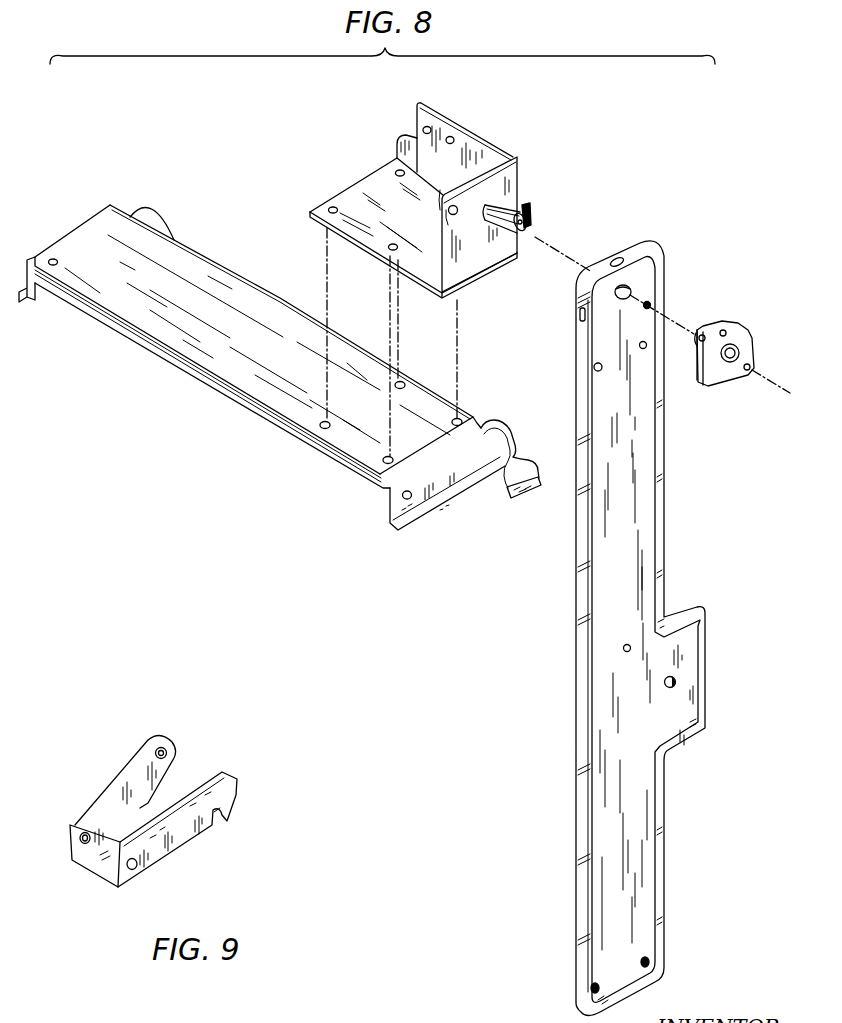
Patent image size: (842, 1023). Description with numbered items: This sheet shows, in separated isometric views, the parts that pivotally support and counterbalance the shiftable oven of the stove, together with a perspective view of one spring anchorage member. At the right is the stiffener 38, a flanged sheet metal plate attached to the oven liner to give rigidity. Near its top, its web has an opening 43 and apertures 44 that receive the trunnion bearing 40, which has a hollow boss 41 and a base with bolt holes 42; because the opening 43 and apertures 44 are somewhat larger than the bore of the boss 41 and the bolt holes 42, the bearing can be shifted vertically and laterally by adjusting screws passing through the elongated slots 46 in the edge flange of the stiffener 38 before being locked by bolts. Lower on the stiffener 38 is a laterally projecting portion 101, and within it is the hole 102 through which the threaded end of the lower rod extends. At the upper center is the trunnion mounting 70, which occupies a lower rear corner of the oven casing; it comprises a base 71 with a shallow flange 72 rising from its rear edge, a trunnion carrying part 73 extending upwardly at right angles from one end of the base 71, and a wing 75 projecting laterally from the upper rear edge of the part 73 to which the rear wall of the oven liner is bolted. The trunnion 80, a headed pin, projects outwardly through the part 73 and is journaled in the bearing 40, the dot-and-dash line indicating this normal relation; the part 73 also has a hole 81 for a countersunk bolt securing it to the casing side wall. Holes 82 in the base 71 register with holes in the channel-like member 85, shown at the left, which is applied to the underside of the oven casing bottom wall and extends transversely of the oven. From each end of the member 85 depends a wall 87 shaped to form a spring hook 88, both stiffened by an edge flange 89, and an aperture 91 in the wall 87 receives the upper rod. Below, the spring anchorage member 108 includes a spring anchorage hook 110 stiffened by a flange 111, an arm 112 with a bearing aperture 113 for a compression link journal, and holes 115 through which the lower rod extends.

In FIG. 8, the trunnion mounting 70 is at (505, 146).
In FIG. 8, the base 71 is at (352, 197).
In FIG. 8, the flange 72 is at (398, 140).
In FIG. 8, the trunnion carrying part 73 is at (505, 181).
In FIG. 8, the wing 75 is at (450, 136).
In FIG. 8, the trunnion 80 is at (514, 230).
In FIG. 8, the hole 81 is at (443, 213).
In FIG. 8, the holes 82 is at (320, 211).
In FIG. 8, the channel-like member 85 is at (287, 408).
In FIG. 8, the wall 87 is at (28, 260).
In FIG. 8, the spring connection or hook 88 is at (534, 466).
In FIG. 8, the edge flange 89 is at (468, 487).
In FIG. 8, the apertures 91 is at (403, 497).
In FIG. 8, the stiffener 38 is at (647, 510).
In FIG. 8, the trunnion bearing 40 is at (738, 383).
In FIG. 8, the hollow boss 41 is at (722, 382).
In FIG. 8, the bolt holes 42 is at (706, 337).
In FIG. 8, the opening 43 is at (628, 290).
In FIG. 8, the apertures 44 is at (652, 303).
In FIG. 8, the elongated openings or slots 46 is at (614, 258).
In FIG. 8, the extension tab 101 is at (683, 656).
In FIG. 8, the hole 102 is at (677, 687).
In FIG. 9, the spring anchorage member 108 is at (110, 864).
In FIG. 9, the spring anchorage hook 110 is at (220, 823).
In FIG. 9, the flange 111 is at (180, 823).
In FIG. 9, the arm 112 is at (125, 788).
In FIG. 9, the bearing aperture 113 is at (167, 753).
In FIG. 9, the holes 115 is at (82, 833).